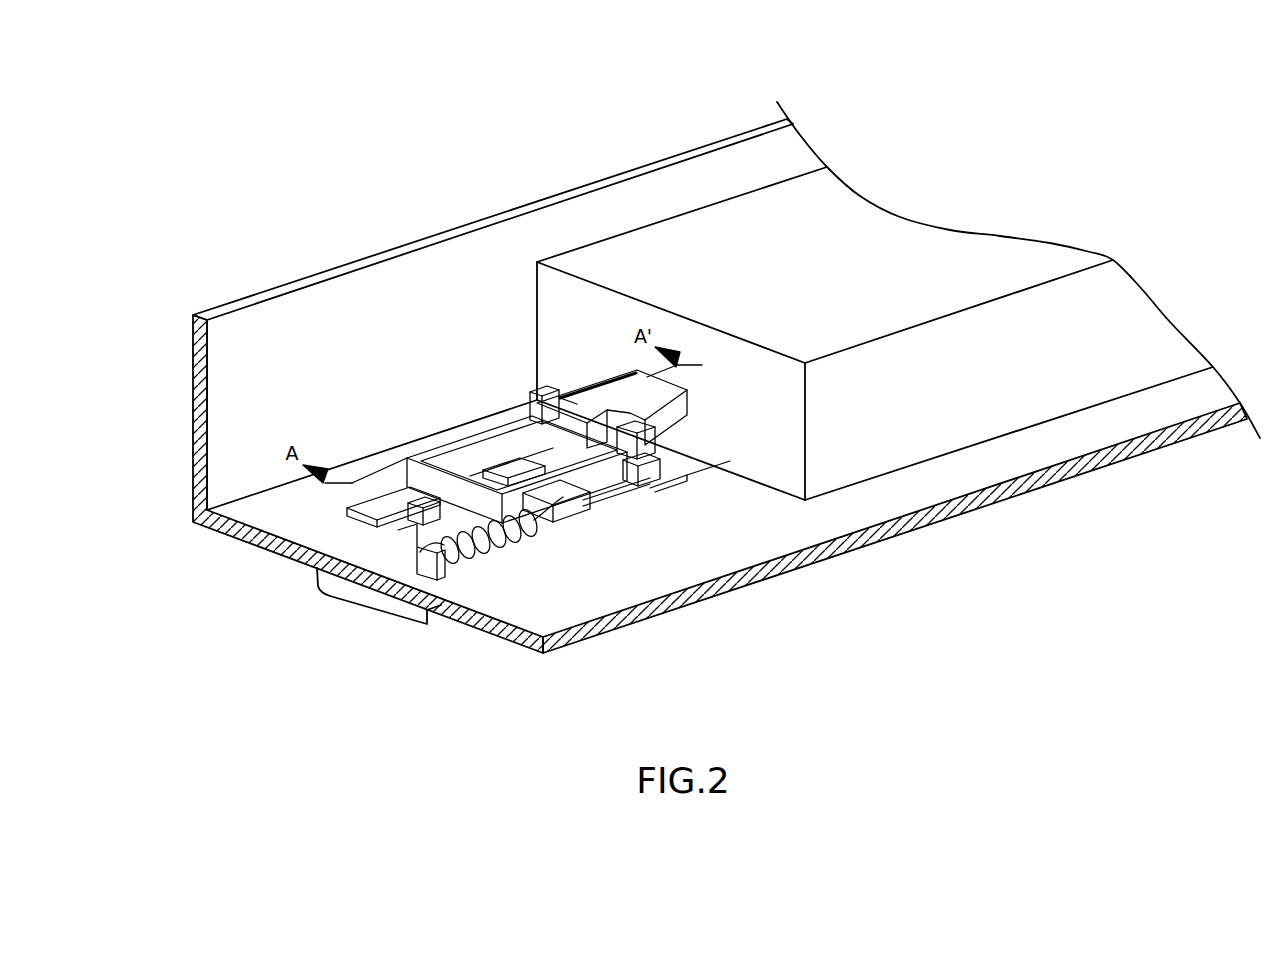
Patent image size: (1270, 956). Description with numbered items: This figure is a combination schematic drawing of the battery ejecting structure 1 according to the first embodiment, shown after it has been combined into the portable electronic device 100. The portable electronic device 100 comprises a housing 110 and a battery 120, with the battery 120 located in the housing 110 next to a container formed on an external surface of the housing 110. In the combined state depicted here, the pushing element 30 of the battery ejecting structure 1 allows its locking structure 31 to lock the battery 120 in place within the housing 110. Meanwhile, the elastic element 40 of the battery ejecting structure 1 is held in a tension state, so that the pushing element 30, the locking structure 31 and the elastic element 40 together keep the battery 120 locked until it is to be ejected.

The portable electronic device 100 is at (1179, 161).
The housing 110 is at (233, 467).
The battery 120 is at (1147, 330).
The battery ejecting structure 1 is at (441, 362).
The pushing element 30 is at (479, 433).
The locking structure 31 is at (604, 386).
The elastic element 40 is at (512, 542).